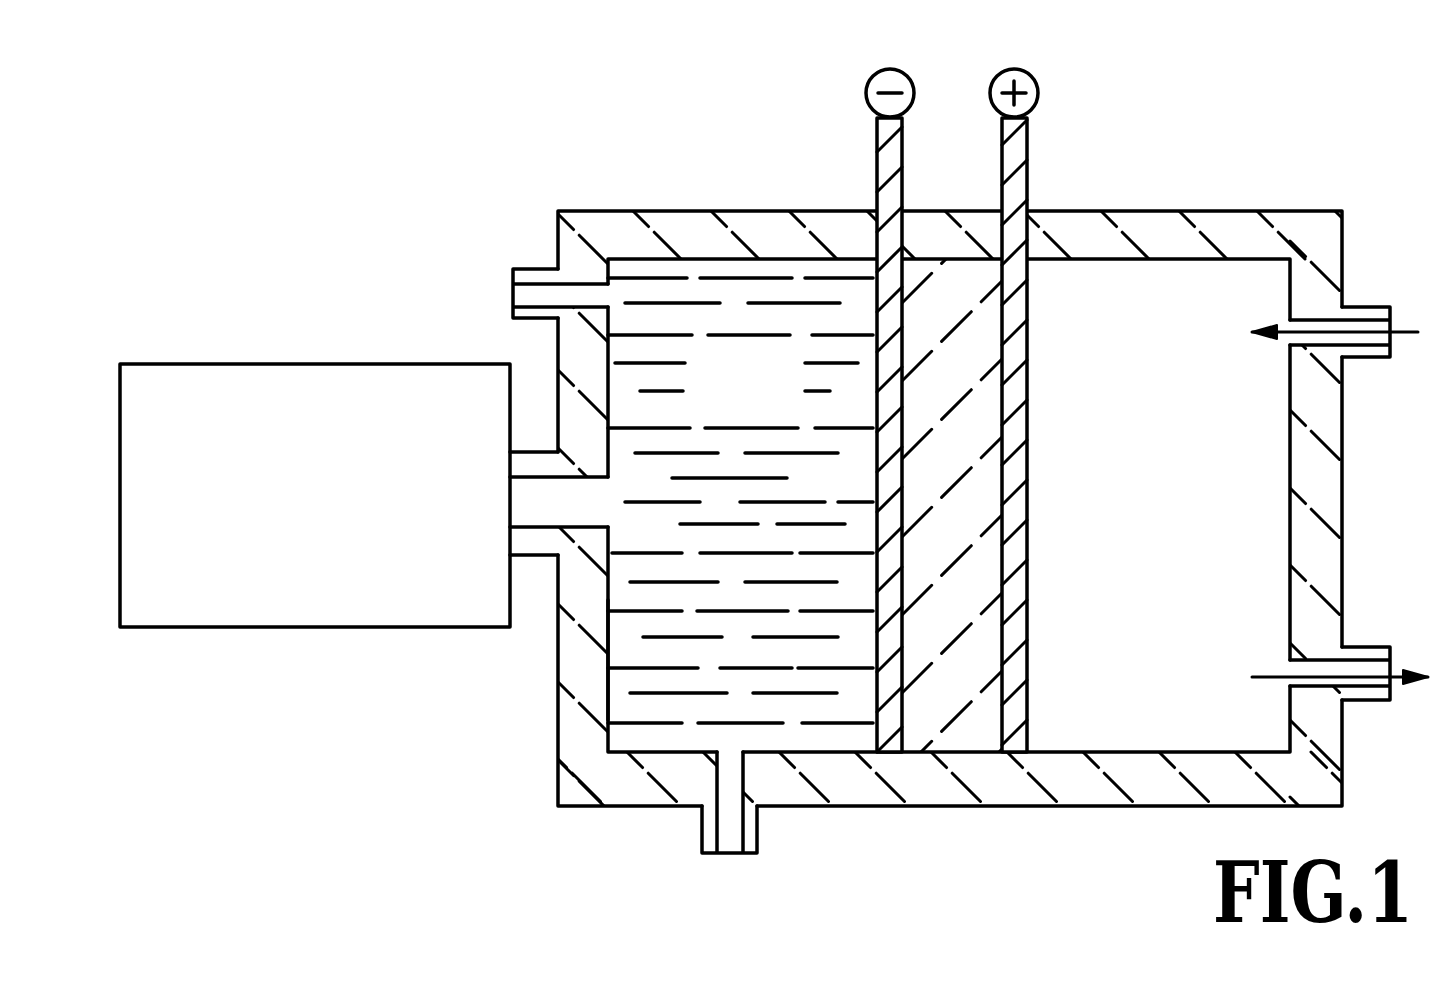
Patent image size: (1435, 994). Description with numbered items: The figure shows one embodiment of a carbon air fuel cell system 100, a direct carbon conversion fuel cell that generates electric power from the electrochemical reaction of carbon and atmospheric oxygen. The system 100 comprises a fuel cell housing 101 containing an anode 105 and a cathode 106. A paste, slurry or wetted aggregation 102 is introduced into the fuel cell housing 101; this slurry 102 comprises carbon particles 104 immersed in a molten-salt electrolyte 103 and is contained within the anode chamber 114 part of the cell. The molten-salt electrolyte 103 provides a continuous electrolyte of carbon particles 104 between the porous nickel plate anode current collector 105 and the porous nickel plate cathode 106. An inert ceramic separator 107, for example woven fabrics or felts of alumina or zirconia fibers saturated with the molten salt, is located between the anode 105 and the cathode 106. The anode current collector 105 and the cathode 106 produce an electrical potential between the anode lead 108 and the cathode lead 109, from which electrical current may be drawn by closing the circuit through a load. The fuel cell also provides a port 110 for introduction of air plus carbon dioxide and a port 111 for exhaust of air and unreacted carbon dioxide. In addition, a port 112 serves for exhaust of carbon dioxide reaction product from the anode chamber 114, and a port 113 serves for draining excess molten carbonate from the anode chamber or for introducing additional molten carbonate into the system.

The fuel cell system 100 is at (1210, 132).
The fuel cell housing 101 is at (692, 211).
The slurry 102 is at (797, 400).
The molten-salt electrolyte 103 is at (262, 428).
The carbon particles 104 is at (438, 428).
The anode 105 is at (875, 722).
The cathode 106 is at (1023, 703).
The inert ceramic separator 107 is at (943, 703).
The anode lead 108 is at (877, 148).
The cathode lead 109 is at (1028, 148).
The port for introduction of air plus carbon dioxide 110 is at (1357, 308).
The port for exhaust of air and unreacted carbon dioxide 111 is at (1366, 650).
The port for exhaust of carbon dioxide reaction product 112 is at (527, 268).
The port for draining excess molten carbonate 113 is at (702, 832).
The anode chamber 114 is at (607, 667).